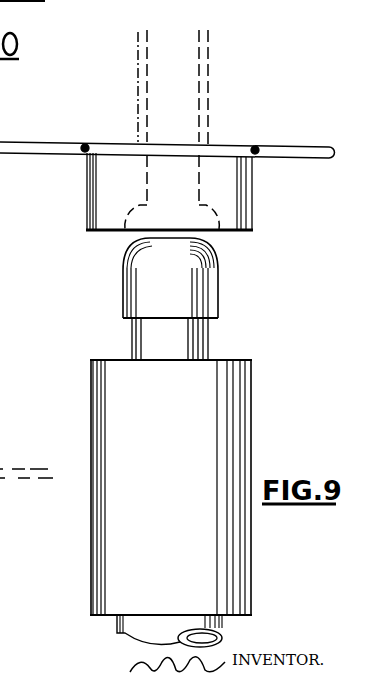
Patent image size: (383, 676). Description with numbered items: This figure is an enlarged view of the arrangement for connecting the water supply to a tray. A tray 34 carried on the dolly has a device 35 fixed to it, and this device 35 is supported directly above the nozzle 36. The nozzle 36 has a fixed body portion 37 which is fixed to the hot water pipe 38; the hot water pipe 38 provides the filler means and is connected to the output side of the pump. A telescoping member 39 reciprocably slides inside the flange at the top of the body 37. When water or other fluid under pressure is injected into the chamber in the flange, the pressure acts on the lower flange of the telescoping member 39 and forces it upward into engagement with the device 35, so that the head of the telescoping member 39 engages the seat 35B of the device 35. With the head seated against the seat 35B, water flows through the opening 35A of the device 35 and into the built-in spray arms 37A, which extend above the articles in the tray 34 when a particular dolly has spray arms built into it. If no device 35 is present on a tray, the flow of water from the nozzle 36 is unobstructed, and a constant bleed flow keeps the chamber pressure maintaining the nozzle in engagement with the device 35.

The tray 34 is at (293, 150).
The device 35 is at (238, 202).
The opening 35A is at (198, 192).
The seat 35B is at (133, 202).
The nozzle 36 is at (123, 293).
The body portion 37 is at (117, 430).
The spray arm 37A is at (202, 52).
The hot water pipe 38 is at (122, 628).
The telescoping member 39 is at (202, 333).